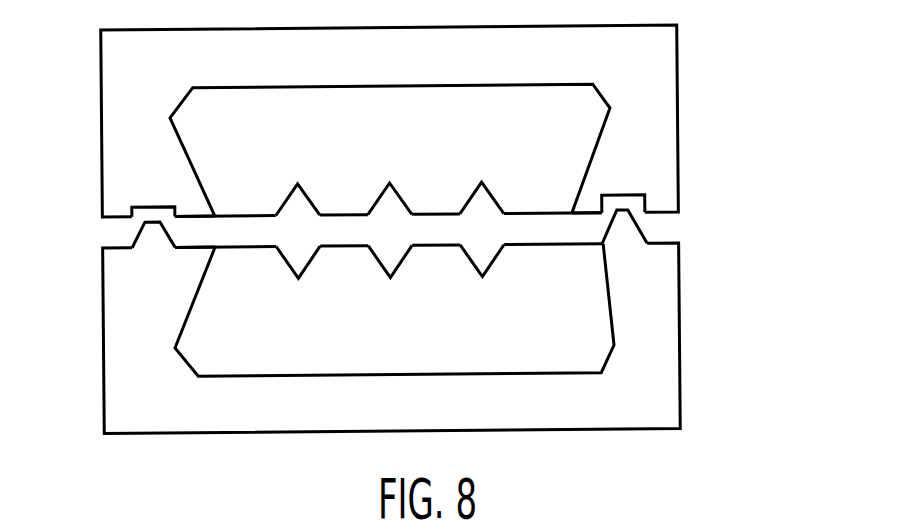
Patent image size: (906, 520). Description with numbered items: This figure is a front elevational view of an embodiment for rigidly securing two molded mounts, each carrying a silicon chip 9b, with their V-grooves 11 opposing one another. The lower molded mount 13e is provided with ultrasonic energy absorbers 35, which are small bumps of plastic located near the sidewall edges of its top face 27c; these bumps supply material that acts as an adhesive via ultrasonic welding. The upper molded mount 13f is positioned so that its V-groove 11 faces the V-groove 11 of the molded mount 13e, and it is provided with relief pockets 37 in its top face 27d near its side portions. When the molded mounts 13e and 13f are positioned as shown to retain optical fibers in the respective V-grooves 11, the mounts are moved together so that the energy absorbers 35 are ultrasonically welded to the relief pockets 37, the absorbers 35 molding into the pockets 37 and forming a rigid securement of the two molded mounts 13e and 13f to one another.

The molded mount 13f is at (644, 65).
The molded mount 13e is at (647, 409).
The silicon chip 9b is at (526, 126).
The V-groove 11 is at (309, 197).
The top face 27d is at (190, 212).
The top face 27c is at (190, 250).
The relief pocket 37 is at (143, 200).
The ultrasonic energy absorber 35 is at (143, 222).